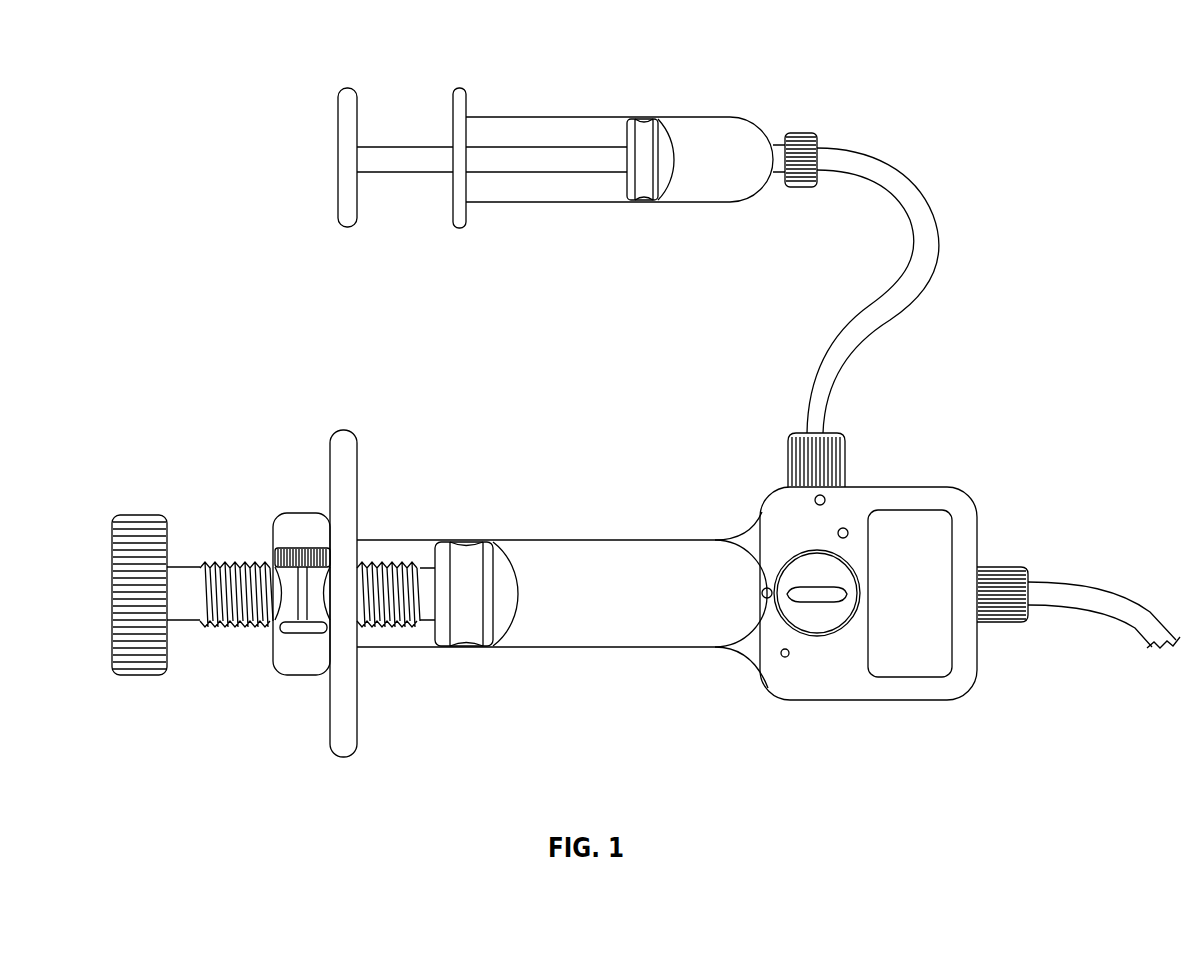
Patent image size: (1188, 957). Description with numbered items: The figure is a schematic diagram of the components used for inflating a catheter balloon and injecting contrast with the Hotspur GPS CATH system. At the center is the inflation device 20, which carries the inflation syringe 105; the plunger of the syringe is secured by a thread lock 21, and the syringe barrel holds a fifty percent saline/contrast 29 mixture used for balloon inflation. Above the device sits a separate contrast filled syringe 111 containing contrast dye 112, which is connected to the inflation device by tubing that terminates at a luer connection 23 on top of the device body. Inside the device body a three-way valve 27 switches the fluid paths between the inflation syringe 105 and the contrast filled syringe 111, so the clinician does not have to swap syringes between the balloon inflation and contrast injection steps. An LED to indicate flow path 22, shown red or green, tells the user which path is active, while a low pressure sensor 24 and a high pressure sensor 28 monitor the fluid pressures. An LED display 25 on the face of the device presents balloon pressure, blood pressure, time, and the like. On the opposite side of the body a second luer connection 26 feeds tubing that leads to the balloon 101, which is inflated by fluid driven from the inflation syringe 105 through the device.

The inflation device 20 is at (646, 597).
The thread lock 21 is at (302, 512).
The LED to indicate flow path 22 is at (790, 556).
The luer connection 23 is at (845, 455).
The low pressure sensor 24 is at (828, 497).
The LED display 25 is at (915, 530).
The luer connection 26 is at (998, 566).
The 3-way valve 27 is at (838, 533).
The high pressure sensor 28 is at (762, 593).
The 50% saline/contrast 29 is at (645, 627).
The balloon 101 is at (1135, 622).
The inflation syringe 105 is at (519, 539).
The contrast filled syringe 111 is at (561, 178).
The contrast dye 112 is at (725, 188).